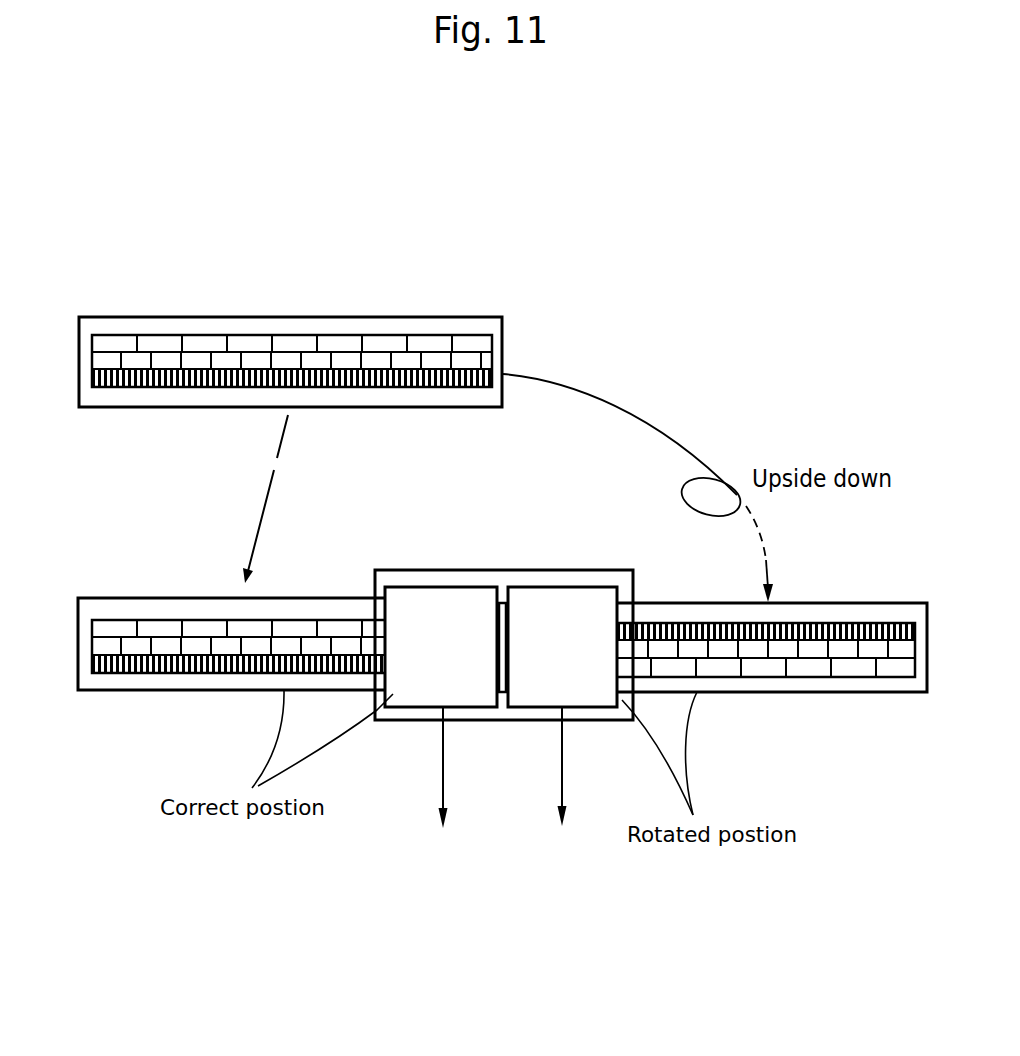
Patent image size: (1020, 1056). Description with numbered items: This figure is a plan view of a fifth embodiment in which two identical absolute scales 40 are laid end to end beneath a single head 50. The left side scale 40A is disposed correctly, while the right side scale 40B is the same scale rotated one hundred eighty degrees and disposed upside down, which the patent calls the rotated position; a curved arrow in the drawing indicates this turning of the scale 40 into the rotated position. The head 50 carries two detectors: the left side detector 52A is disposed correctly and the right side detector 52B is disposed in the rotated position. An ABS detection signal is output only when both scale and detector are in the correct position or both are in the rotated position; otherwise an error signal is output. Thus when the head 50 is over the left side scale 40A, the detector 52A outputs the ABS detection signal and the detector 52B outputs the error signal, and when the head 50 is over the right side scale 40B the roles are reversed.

The absolute scale 40 is at (450, 317).
The left side scale 40A is at (132, 690).
The right side scale 40B is at (733, 692).
The head 50 is at (510, 675).
The left side detector 52A is at (403, 713).
The right side detector 52B is at (602, 720).